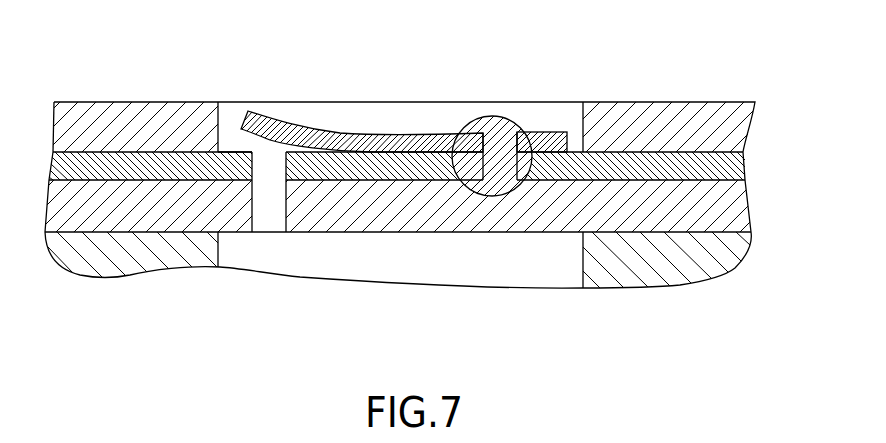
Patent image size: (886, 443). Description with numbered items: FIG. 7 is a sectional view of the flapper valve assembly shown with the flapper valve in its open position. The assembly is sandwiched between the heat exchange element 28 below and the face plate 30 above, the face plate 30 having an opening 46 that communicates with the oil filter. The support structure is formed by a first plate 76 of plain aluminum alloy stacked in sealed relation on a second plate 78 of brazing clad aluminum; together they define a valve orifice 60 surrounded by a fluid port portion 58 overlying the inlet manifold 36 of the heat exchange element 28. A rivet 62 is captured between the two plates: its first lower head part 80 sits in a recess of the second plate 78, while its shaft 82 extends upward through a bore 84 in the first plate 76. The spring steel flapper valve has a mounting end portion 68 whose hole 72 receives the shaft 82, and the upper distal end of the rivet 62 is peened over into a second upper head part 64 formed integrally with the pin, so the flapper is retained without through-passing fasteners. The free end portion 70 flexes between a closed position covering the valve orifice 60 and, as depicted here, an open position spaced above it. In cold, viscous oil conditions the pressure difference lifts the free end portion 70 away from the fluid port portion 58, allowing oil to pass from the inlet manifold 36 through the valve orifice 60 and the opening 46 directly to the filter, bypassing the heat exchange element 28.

The heat exchange element 28 is at (752, 258).
The face plate 30 is at (738, 123).
The inlet manifold 36 is at (375, 263).
The opening 46 is at (358, 108).
The fluid port portion 58 is at (240, 153).
The valve orifice 60 is at (270, 216).
The rivet 62 is at (527, 136).
The second upper head part 64 is at (500, 116).
The mounting end portion 68 is at (554, 127).
The free end portion 70 is at (300, 111).
The hole 72 is at (481, 145).
The first plate 76 is at (732, 164).
The second plate 78 is at (746, 213).
The first lower head part 80 is at (500, 196).
The shaft 82 is at (505, 167).
The bore 84 is at (482, 168).